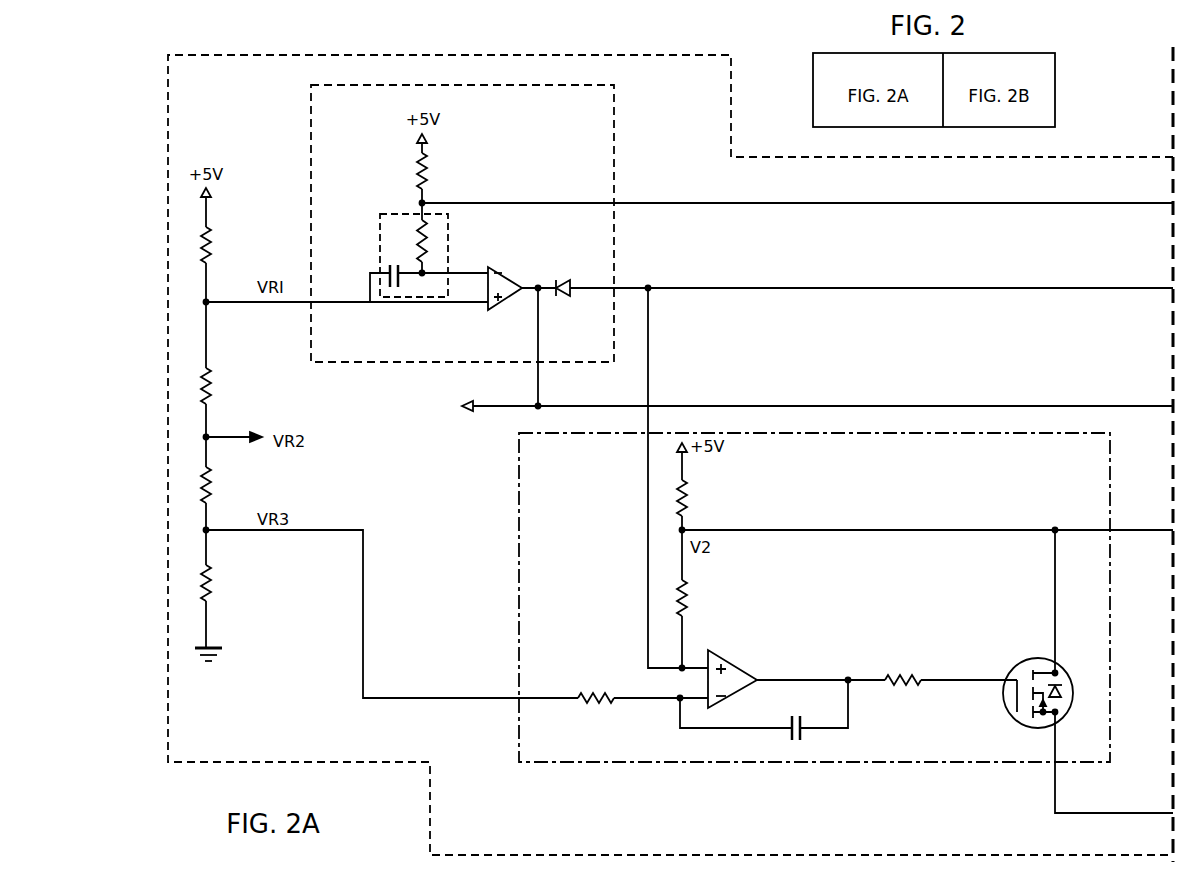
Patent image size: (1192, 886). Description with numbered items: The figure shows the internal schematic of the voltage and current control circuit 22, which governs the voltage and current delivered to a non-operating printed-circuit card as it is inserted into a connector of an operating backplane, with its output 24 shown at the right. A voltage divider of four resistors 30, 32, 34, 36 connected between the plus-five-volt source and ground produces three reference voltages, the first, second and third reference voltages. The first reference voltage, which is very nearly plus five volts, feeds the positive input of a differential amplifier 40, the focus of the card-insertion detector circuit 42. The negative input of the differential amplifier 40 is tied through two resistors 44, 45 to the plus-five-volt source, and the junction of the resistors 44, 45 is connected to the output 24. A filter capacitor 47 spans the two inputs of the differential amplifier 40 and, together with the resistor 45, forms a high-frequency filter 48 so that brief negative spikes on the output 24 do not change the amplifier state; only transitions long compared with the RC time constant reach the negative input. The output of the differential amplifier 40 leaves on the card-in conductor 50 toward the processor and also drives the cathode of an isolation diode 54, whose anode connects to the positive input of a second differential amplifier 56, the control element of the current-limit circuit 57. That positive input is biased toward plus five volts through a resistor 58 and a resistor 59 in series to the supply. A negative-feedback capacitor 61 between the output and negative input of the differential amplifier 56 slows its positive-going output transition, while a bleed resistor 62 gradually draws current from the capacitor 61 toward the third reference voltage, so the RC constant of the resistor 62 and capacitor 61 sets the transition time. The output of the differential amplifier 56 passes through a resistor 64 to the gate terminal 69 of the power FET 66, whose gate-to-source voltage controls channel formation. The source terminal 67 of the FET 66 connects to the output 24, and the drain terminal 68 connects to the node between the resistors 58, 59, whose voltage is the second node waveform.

The voltage and current control circuit 22 is at (1085, 158).
The output 24 is at (652, 203).
The resistor 30 is at (208, 259).
The resistor 32 is at (208, 396).
The resistor 34 is at (208, 493).
The resistor 36 is at (208, 590).
The differential amplifier 40 is at (512, 273).
The card-insertion detector circuit 42 is at (618, 127).
The resistor 44 is at (425, 178).
The resistor 45 is at (425, 258).
The filter capacitor 47 is at (391, 264).
The high-frequency filter 48 is at (378, 220).
The CARDIN conductor 50 is at (492, 407).
The isolation diode 54 is at (570, 280).
The differential amplifier 56 is at (740, 663).
The current-limit circuit 57 is at (519, 513).
The resistor 58 is at (684, 597).
The resistor 59 is at (684, 488).
The negative-feedback capacitor 61 is at (805, 738).
The bleed resistor 62 is at (605, 697).
The resistor 64 is at (903, 678).
The power FET 66 is at (1022, 657).
The source terminal 67 is at (1058, 757).
The drain terminal 68 is at (1057, 647).
The gate terminal 69 is at (968, 683).